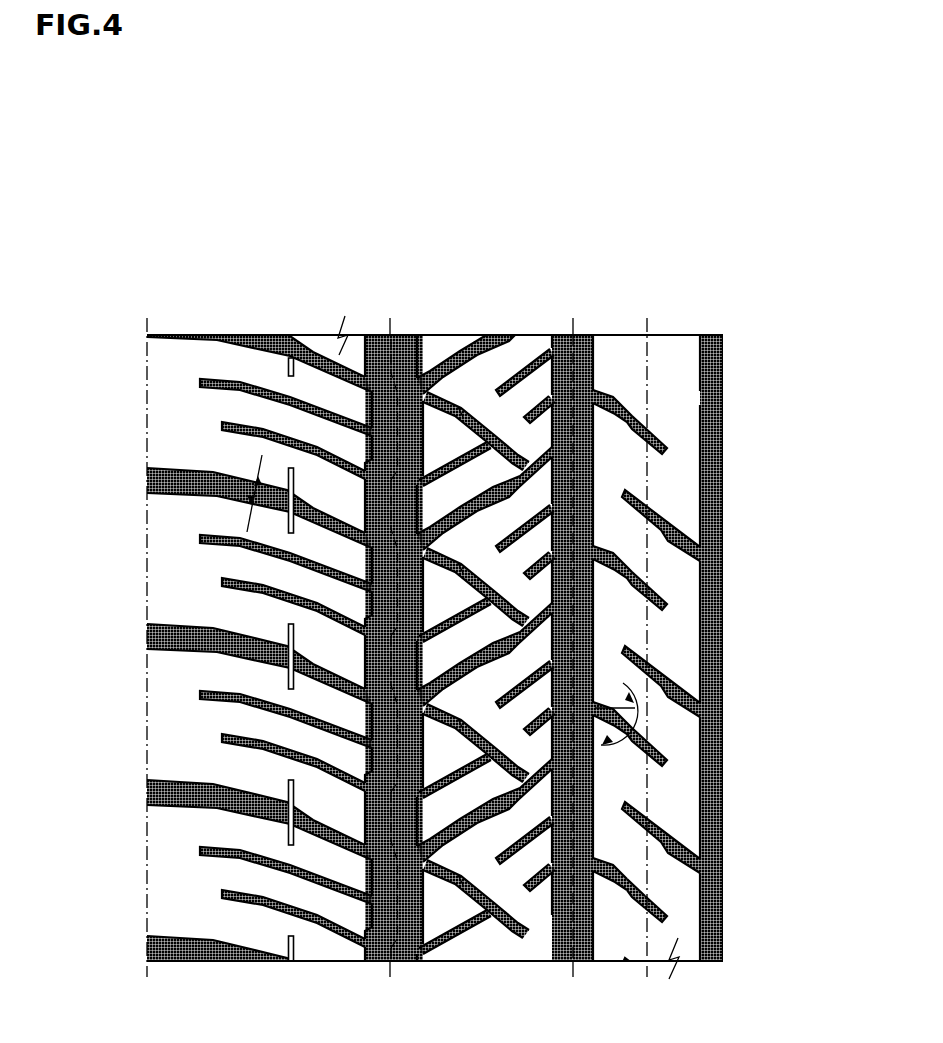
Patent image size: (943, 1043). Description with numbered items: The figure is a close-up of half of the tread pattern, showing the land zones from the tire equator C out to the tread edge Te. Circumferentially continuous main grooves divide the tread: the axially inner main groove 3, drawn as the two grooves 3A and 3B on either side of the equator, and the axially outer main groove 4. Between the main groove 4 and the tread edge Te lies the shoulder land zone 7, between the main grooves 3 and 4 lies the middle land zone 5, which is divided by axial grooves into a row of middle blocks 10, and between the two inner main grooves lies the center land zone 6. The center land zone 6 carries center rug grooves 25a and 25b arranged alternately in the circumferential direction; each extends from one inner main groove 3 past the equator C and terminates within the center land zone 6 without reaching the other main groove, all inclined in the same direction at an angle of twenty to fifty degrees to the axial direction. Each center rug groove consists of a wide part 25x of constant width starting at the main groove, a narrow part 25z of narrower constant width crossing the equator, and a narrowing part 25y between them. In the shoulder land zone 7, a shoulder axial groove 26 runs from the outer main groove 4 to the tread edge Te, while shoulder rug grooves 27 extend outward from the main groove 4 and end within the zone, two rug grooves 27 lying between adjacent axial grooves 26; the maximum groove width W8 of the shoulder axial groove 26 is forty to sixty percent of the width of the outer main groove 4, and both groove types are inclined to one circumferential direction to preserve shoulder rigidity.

The shoulder land zone 7 is at (230, 636).
The axially outer main groove 4 is at (377, 360).
The middle land zone 5 is at (486, 605).
The middle block 10 is at (513, 361).
The axially inner main groove 3 is at (645, 622).
The axially inner main groove 3A is at (581, 360).
The axially inner main groove 3B is at (711, 362).
The center land zone 6 is at (698, 642).
The shoulder axial groove 26 is at (259, 664).
The shoulder rug groove 27 is at (194, 360).
The maximum groove width of the shoulder axial groove W8 is at (255, 476).
The center rug groove 25a is at (630, 656).
The center rug groove 25b is at (661, 759).
The wide part 25x is at (610, 874).
The narrowing part 25y is at (636, 893).
The narrow part 25z is at (656, 909).
The tread edge Te is at (148, 634).
The tire equator C is at (647, 634).